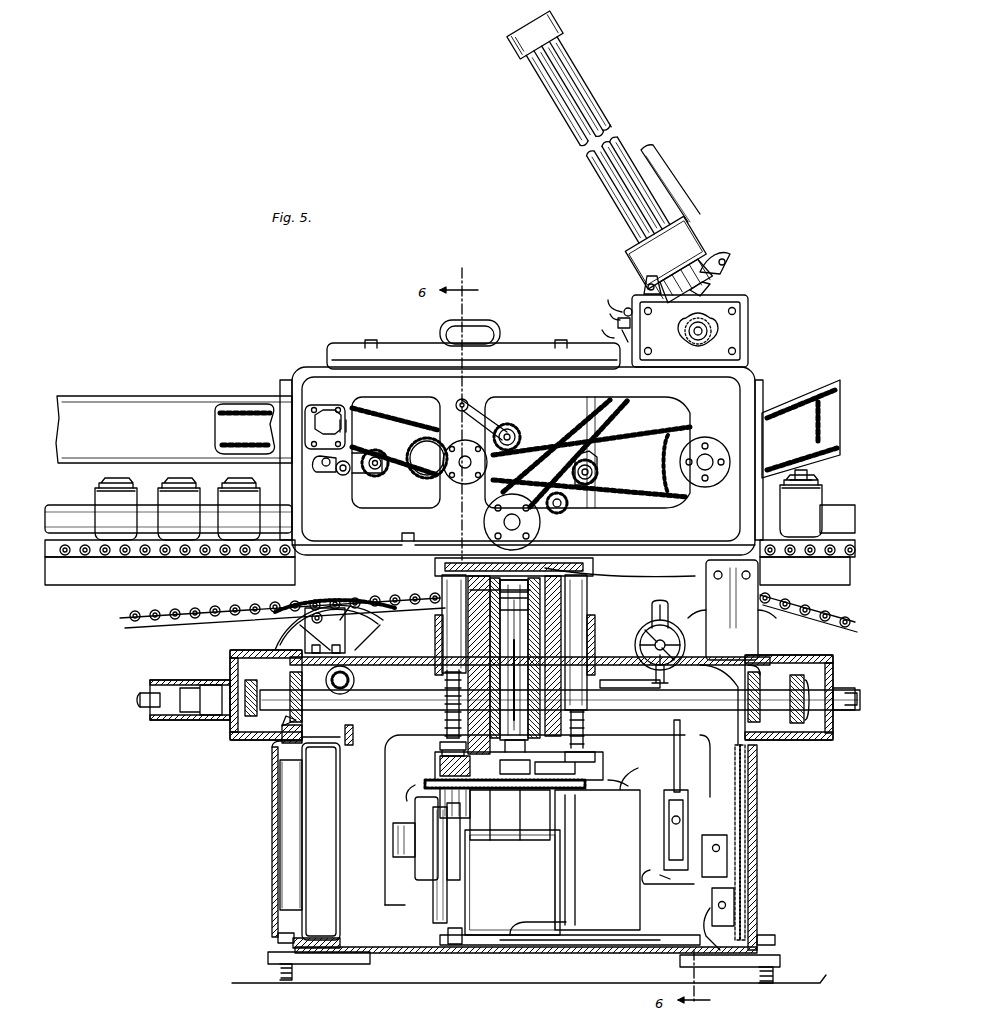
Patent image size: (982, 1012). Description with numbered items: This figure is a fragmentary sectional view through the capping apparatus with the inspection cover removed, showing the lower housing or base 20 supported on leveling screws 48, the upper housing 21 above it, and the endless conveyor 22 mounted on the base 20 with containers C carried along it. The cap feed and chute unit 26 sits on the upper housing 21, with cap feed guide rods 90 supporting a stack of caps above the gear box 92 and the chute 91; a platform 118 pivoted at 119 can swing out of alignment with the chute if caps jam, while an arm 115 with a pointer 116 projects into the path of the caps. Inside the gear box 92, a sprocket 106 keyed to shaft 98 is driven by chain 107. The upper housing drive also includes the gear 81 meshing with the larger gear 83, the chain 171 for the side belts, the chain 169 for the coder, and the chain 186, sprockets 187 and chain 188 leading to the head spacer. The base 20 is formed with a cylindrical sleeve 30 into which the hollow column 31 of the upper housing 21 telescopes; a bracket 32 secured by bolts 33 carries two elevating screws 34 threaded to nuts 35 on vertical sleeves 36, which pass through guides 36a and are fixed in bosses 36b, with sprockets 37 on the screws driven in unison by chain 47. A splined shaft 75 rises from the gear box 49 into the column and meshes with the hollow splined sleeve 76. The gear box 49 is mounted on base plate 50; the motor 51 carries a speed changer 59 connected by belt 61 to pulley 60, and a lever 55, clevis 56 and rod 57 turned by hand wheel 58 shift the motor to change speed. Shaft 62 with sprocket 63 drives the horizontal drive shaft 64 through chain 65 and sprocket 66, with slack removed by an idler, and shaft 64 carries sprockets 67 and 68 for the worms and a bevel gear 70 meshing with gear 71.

The lower housing or base 20 is at (760, 852).
The upper housing 21 is at (760, 395).
The endless conveyor 22 is at (114, 562).
The cap feed and chute unit 26 is at (640, 288).
The cylindrical sleeve 30 is at (454, 742).
The hollow column 31 is at (460, 594).
The bracket 32 is at (590, 766).
The bolts 33 is at (472, 806).
The elevating screws 34 is at (450, 734).
The nuts 35 is at (455, 694).
The vertical sleeves 36 is at (450, 640).
The guides 36a is at (606, 620).
The bosses 36b is at (660, 580).
The sprockets 37 is at (430, 783).
The chain 47 is at (555, 810).
The leveling screws 48 is at (265, 942).
The gear box 49 is at (512, 882).
The base plate 50 is at (620, 952).
The motor 51 is at (597, 849).
The lever 55 is at (655, 890).
The clevis 56 is at (685, 812).
The rod 57 is at (668, 746).
The hand wheel 58 is at (652, 625).
The speed changer 59 is at (412, 806).
The pulley 60 is at (434, 912).
The belt 61 is at (446, 932).
The shaft 62 is at (722, 960).
The sprocket 63 is at (736, 906).
The horizontal drive shaft 64 is at (628, 704).
The chain 65 is at (738, 806).
The sprocket 66 is at (732, 660).
The sprocket 67 is at (798, 674).
The sprocket 68 is at (251, 692).
The bevel gear 70 is at (308, 723).
The gear 71 is at (370, 684).
The splined shaft 75 is at (518, 688).
The hollow splined sleeve 76 is at (530, 600).
The gear 81 is at (566, 468).
The gear 83 is at (416, 484).
The cap feed guide rods 90 is at (607, 160).
The chute 91 is at (603, 334).
The gear box 92 is at (748, 340).
The shaft 98 is at (684, 322).
The sprocket 106 is at (690, 340).
The chain 107 is at (641, 422).
The arm 115 is at (605, 318).
The pointer 116 is at (603, 300).
The platform 118 is at (712, 284).
The pivot 119 is at (726, 262).
The chain 169 is at (228, 408).
The chain 171 is at (430, 402).
The chain 186 is at (660, 484).
The sprockets 187 is at (668, 460).
The chain 188 is at (800, 440).
The can C is at (96, 494).